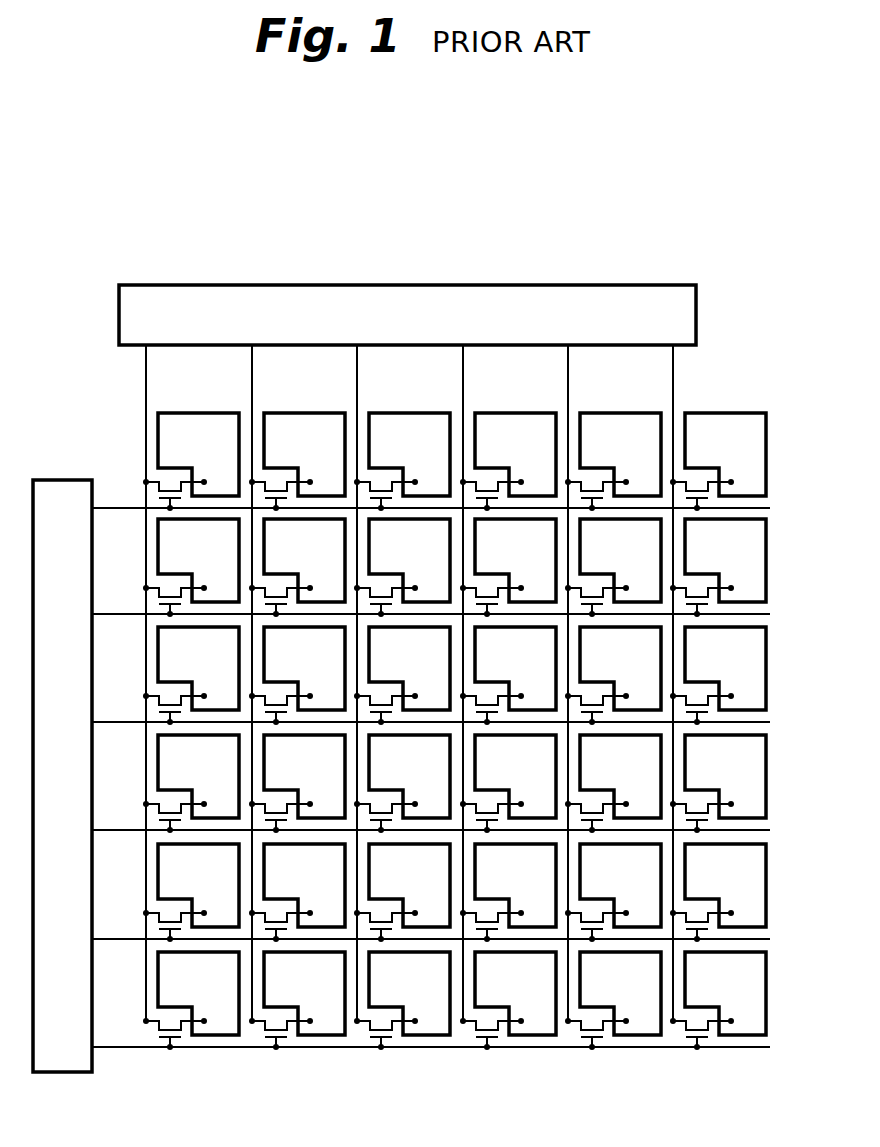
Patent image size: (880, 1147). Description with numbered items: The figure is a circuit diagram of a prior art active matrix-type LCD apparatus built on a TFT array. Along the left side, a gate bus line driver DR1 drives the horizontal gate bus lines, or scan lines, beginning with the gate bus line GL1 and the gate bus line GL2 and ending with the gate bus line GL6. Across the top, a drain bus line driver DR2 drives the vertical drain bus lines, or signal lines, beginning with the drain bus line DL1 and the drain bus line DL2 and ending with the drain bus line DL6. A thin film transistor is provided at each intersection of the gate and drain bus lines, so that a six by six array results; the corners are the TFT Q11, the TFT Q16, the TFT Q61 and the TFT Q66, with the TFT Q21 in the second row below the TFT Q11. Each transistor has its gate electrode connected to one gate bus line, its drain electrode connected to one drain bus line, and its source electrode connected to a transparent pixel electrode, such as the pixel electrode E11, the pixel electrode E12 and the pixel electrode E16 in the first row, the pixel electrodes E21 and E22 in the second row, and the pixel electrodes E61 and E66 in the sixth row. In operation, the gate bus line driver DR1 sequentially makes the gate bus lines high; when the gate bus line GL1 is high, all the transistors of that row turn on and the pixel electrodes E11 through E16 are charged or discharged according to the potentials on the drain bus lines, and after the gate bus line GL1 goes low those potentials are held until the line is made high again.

The gate bus line driver DR1 is at (63, 1074).
The drain bus line driver DR2 is at (536, 284).
The drain bus line DL1 is at (147, 380).
The drain bus line DL2 is at (253, 380).
The drain bus line DL6 is at (674, 365).
The gate bus line GL1 is at (112, 504).
The gate bus line GL2 is at (112, 610).
The gate bus line GL6 is at (127, 1049).
The TFT Q11 is at (160, 481).
The TFT Q16 is at (708, 495).
The TFT Q21 is at (163, 606).
The TFT Q61 is at (188, 1032).
The TFT Q66 is at (708, 1036).
The transparent pixel electrode E11 is at (198, 454).
The transparent pixel electrode E12 is at (304, 454).
The transparent pixel electrode E16 is at (725, 454).
The transparent pixel electrode E21 is at (198, 560).
The transparent pixel electrode E22 is at (304, 560).
The transparent pixel electrode E61 is at (198, 993).
The transparent pixel electrode E66 is at (725, 993).